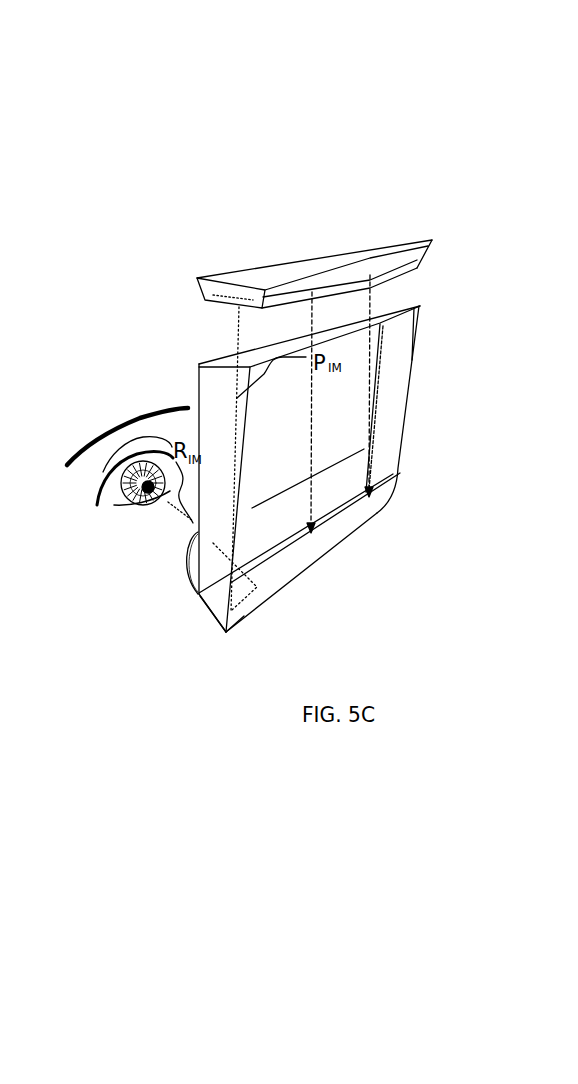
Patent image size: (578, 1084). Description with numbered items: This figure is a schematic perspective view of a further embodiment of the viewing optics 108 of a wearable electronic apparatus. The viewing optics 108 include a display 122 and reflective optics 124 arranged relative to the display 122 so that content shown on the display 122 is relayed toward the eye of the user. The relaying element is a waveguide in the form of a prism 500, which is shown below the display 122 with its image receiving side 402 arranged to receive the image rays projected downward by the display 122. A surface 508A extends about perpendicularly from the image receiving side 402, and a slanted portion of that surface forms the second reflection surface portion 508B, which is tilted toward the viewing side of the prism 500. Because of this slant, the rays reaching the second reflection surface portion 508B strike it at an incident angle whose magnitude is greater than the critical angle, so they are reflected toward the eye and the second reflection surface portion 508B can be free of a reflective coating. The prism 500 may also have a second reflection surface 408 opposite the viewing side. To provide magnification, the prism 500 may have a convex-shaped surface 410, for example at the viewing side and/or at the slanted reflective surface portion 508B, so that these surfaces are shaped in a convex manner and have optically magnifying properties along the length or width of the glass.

The viewing optics 108 is at (462, 252).
The display 122 is at (223, 272).
The image receiving side 402 is at (384, 313).
The prism 500 is at (426, 408).
The surface 508A is at (402, 438).
The second reflection surface portion 508B is at (368, 510).
The convex-shaped surface 410 is at (290, 493).
The reflective optics 124 is at (169, 548).
The second reflection surface 408 is at (210, 614).